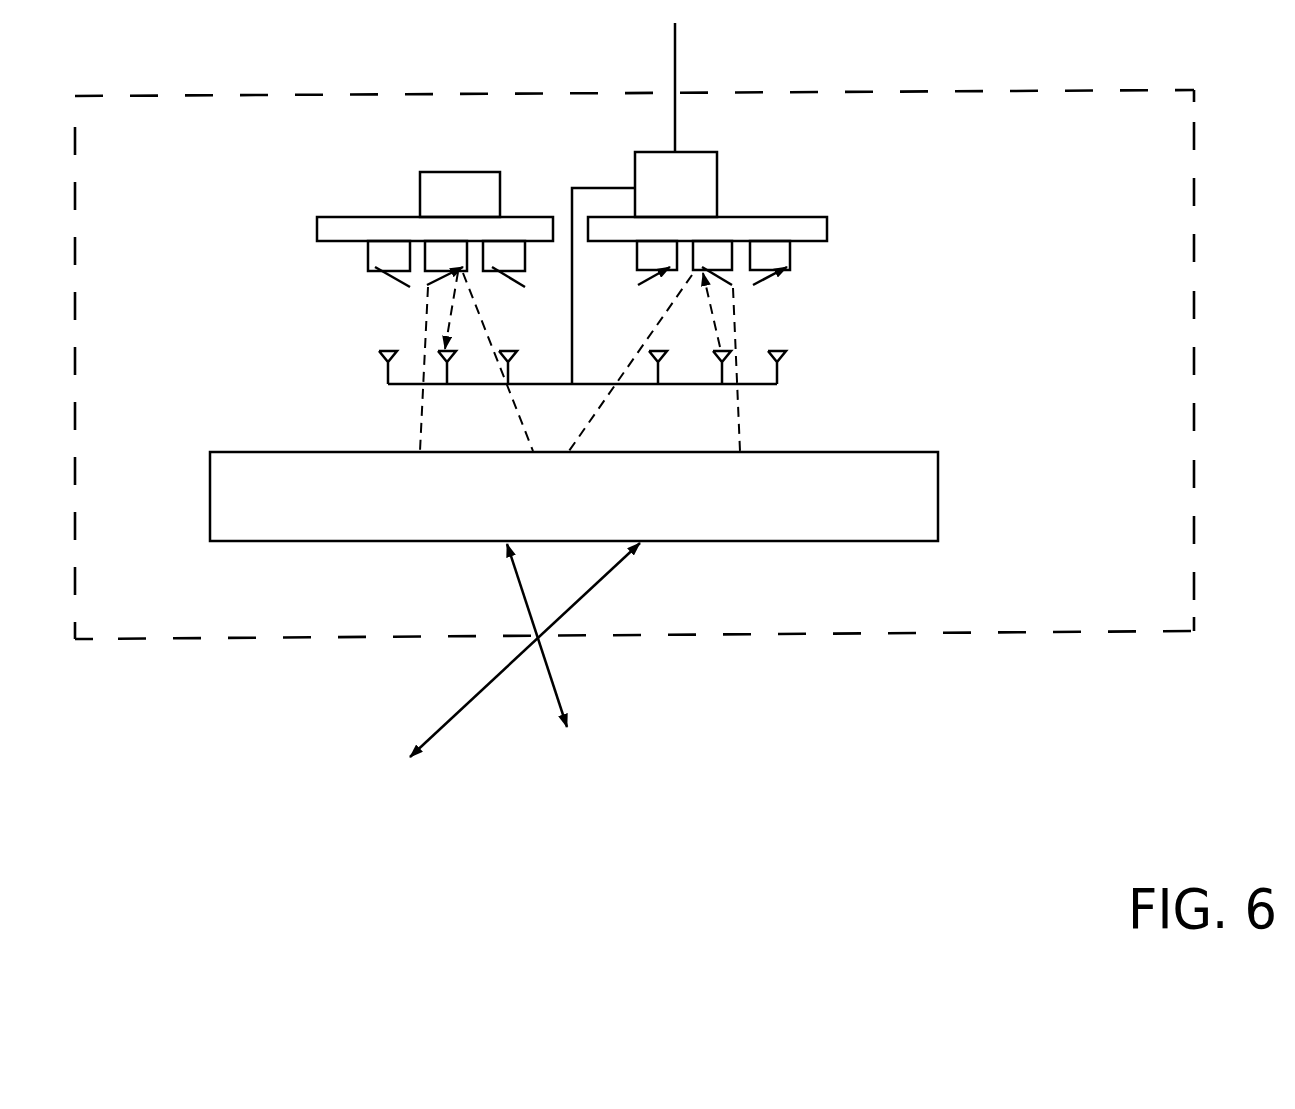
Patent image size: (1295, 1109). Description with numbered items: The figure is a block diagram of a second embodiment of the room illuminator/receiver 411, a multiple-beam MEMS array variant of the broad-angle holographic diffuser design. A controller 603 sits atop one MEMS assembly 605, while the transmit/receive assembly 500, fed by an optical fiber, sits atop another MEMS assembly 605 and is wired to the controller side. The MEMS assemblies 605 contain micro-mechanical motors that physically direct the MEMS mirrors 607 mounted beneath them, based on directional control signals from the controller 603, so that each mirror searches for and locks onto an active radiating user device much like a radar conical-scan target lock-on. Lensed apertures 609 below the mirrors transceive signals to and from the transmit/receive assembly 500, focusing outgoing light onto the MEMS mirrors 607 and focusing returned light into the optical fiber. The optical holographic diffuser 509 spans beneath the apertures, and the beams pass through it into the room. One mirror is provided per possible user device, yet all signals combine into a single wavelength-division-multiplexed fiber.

The room illuminator/receiver 411 is at (634, 347).
The transmit/receive assembly 500 is at (700, 203).
The optical holographic diffuser 509 is at (595, 517).
The controller 603 is at (482, 205).
The MEMS assemblies 605 is at (791, 250).
The MEMS mirrors 607 is at (768, 278).
The lensed apertures 609 is at (786, 351).